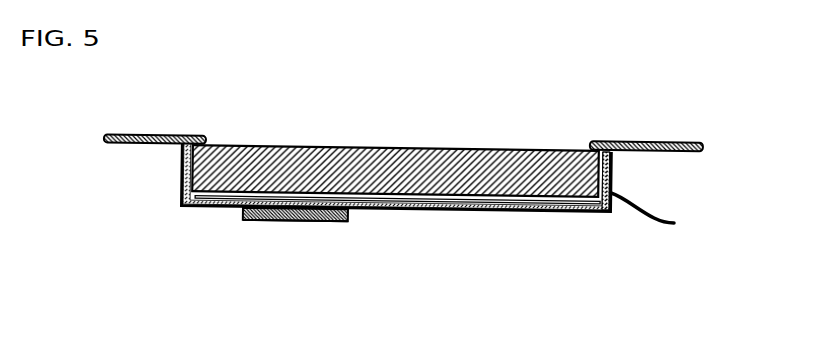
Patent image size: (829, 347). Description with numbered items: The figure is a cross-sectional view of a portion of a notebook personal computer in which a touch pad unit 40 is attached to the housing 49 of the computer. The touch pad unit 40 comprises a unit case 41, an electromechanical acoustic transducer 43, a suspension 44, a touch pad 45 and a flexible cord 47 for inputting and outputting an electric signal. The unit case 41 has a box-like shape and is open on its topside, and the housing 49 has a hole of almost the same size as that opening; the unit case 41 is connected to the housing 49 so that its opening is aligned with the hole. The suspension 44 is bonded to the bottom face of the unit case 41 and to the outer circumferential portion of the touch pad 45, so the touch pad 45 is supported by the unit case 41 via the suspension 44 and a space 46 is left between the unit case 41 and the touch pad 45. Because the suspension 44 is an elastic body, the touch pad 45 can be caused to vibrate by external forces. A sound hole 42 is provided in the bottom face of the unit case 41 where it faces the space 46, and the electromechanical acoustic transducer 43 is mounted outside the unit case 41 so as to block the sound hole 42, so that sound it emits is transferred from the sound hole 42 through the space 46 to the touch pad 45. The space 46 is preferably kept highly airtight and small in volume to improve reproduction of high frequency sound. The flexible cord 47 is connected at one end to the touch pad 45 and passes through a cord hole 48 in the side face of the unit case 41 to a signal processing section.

The touch pad unit 40 is at (422, 228).
The unit case 41 is at (180, 179).
The sound hole 42 is at (277, 220).
The electromechanical acoustic transducer 43 is at (317, 222).
The suspension 44 is at (207, 207).
The touch pad 45 is at (386, 149).
The space 46 is at (478, 200).
The flexible cord 47 is at (663, 225).
The cord hole 48 is at (612, 191).
The housing 49 is at (635, 142).